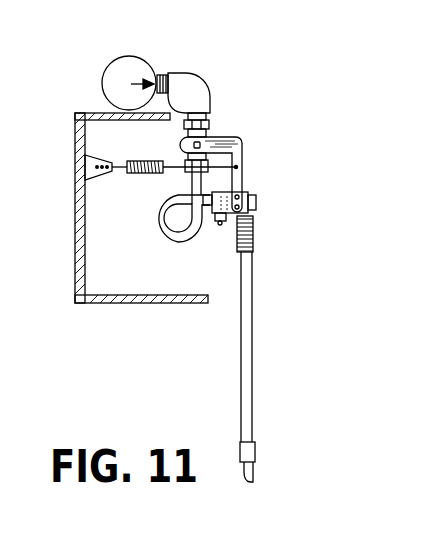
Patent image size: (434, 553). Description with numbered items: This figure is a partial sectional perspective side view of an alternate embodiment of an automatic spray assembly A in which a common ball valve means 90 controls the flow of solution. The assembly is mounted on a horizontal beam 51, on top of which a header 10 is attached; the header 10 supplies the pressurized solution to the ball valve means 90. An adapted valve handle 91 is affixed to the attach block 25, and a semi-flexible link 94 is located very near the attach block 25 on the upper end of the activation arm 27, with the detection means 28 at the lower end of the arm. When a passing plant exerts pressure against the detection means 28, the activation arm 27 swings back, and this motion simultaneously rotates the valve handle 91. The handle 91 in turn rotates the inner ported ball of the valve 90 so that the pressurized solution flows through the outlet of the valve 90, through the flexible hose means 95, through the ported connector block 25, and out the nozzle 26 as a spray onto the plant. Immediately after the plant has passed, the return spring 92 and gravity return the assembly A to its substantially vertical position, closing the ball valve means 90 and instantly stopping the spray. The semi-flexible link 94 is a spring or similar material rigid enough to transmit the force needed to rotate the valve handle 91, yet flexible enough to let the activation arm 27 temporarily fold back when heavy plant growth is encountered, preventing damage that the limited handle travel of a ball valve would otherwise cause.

The header 10 is at (142, 57).
The common ball valve means 90 is at (212, 125).
The horizontal beam 51 is at (77, 302).
The return spring 92 is at (150, 160).
The adapted valve handle 91 is at (245, 163).
The attach block 25 is at (257, 204).
The nozzle 26 is at (222, 225).
The flexible hose means 95 is at (160, 235).
The semi-flexible link 94 is at (258, 236).
The activation arm 27 is at (256, 365).
The detection means 28 is at (256, 466).
The automatic spray assembly A is at (322, 170).